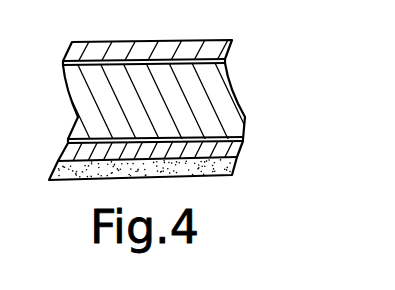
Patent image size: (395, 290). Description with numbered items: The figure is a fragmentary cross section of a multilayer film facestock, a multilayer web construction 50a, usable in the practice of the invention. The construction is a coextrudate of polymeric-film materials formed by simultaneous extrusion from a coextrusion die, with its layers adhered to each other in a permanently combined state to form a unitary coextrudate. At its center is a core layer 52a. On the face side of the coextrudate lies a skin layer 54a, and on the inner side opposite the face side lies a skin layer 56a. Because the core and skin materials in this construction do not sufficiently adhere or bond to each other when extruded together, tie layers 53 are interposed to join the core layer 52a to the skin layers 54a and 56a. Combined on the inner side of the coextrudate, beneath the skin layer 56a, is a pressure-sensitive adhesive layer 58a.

The multilayer web construction 50a is at (133, 30).
The skin layer 54a is at (219, 47).
The tie layers 53 is at (226, 61).
The core layer 52a is at (223, 103).
The skin layer 56a is at (233, 153).
The pressure-sensitive adhesive layer 58a is at (226, 170).